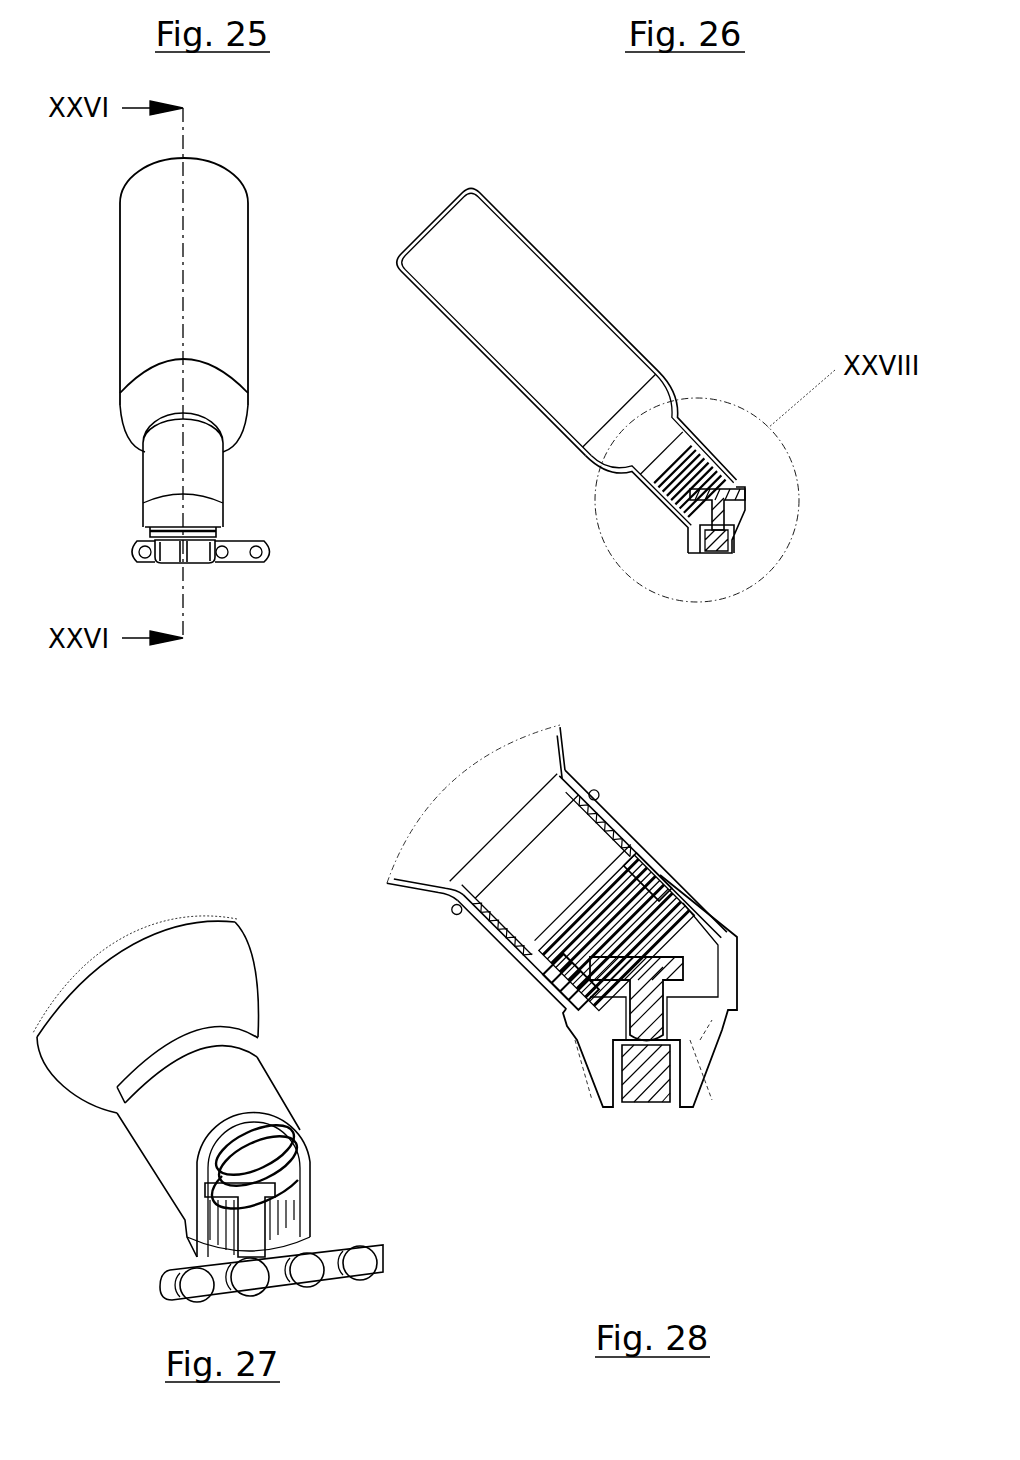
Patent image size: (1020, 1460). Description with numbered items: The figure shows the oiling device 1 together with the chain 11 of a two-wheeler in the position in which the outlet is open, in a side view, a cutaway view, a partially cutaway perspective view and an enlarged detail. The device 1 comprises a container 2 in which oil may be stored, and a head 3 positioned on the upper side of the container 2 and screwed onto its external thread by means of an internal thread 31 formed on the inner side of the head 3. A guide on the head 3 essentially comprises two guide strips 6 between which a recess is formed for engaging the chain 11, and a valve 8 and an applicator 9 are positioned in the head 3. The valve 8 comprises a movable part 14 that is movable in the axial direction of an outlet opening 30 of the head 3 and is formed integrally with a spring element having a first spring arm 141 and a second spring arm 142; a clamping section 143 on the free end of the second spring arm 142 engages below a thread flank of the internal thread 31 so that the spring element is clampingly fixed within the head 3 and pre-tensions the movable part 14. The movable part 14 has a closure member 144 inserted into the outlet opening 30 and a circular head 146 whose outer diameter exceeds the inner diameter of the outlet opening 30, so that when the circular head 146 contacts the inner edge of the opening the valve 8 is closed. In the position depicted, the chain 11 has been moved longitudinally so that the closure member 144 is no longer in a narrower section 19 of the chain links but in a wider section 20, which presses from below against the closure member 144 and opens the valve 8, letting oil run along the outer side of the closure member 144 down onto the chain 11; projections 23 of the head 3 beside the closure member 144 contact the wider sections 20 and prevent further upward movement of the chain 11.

In FIG. 25, the device 1 is at (92, 296).
In FIG. 26, the device 1 is at (640, 278).
In FIG. 28, the device 1 is at (432, 966).
In FIG. 25, the container 2 is at (216, 318).
In FIG. 26, the container 2 is at (512, 223).
In FIG. 28, the container 2 is at (557, 740).
In FIG. 25, the head 3 is at (205, 467).
In FIG. 26, the head 3 is at (692, 433).
In FIG. 27, the head 3 is at (120, 1272).
In FIG. 28, the head 3 is at (597, 800).
In FIG. 25, the guide strips 6 is at (198, 555).
In FIG. 28, the guide strips 6 is at (688, 1080).
In FIG. 28, the valve 8 is at (570, 1000).
In FIG. 27, the applicator 9 is at (292, 1202).
In FIG. 25, the chain 11 is at (255, 558).
In FIG. 27, the chain 11 is at (402, 1272).
In FIG. 28, the movable part 14 is at (700, 968).
In FIG. 27, the narrower section 19 is at (277, 1281).
In FIG. 27, the wider section 20 is at (243, 1281).
In FIG. 28, the wider section 20 is at (657, 1078).
In FIG. 27, the projections 23 is at (293, 1234).
In FIG. 28, the outlet opening 30 is at (663, 1020).
In FIG. 28, the internal thread 31 is at (642, 867).
In FIG. 28, the first spring arm 141 is at (545, 977).
In FIG. 28, the second spring arm 142 is at (607, 907).
In FIG. 28, the clamping section 143 is at (657, 870).
In FIG. 28, the closure member 144 is at (650, 1028).
In FIG. 28, the circular head 146 is at (670, 967).